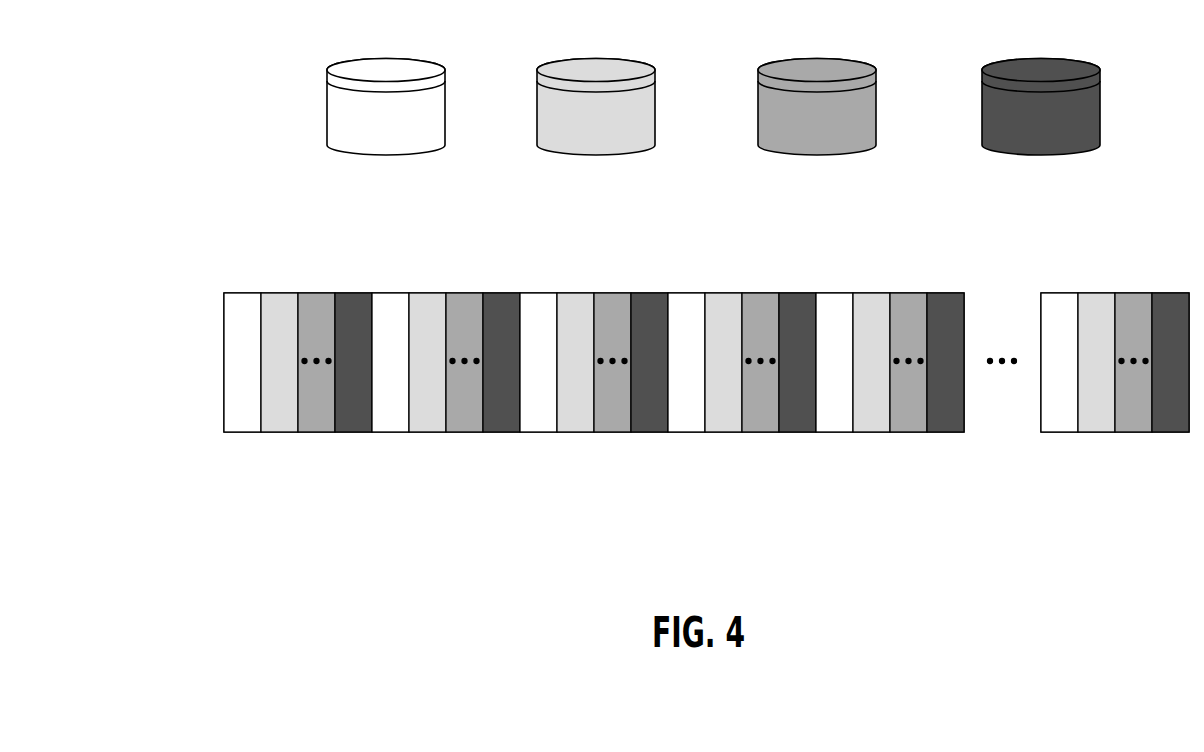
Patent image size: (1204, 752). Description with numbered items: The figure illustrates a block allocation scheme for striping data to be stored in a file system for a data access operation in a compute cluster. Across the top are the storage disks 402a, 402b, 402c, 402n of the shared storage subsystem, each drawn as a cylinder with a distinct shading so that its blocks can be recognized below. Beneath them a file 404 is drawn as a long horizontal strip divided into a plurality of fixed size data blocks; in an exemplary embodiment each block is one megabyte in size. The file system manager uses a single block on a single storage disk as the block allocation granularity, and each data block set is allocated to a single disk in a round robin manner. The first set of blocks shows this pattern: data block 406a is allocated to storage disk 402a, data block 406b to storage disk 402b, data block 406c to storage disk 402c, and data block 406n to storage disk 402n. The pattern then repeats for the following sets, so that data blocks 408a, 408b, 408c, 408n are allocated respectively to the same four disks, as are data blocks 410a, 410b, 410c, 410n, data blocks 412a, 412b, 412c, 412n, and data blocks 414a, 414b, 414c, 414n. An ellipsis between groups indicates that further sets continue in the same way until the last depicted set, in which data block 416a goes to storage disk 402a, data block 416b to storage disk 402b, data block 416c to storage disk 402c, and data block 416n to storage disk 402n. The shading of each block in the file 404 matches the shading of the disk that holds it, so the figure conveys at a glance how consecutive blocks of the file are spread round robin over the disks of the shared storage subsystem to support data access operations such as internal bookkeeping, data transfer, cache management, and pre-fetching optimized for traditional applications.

The storage disk 402a is at (393, 57).
The storage disk 402b is at (598, 57).
The storage disk 402c is at (831, 57).
The storage disk 402n is at (1055, 57).
The file 404 is at (224, 293).
The data block 406a is at (244, 432).
The data block 406b is at (278, 293).
The data block 406c is at (318, 432).
The data block 406n is at (352, 293).
The data block 408a is at (392, 432).
The data block 408b is at (426, 293).
The data block 408c is at (466, 432).
The data block 408n is at (500, 293).
The data block 410a is at (540, 432).
The data block 410b is at (574, 293).
The data block 410c is at (614, 432).
The data block 410n is at (648, 293).
The data block 412a is at (688, 432).
The data block 412b is at (722, 293).
The data block 412c is at (762, 432).
The data block 412n is at (796, 293).
The data block 414a is at (836, 432).
The data block 414b is at (870, 293).
The data block 414c is at (910, 432).
The data block 414n is at (944, 293).
The data block 416a is at (1062, 432).
The data block 416b is at (1096, 293).
The data block 416c is at (1136, 432).
The data block 416n is at (1170, 293).